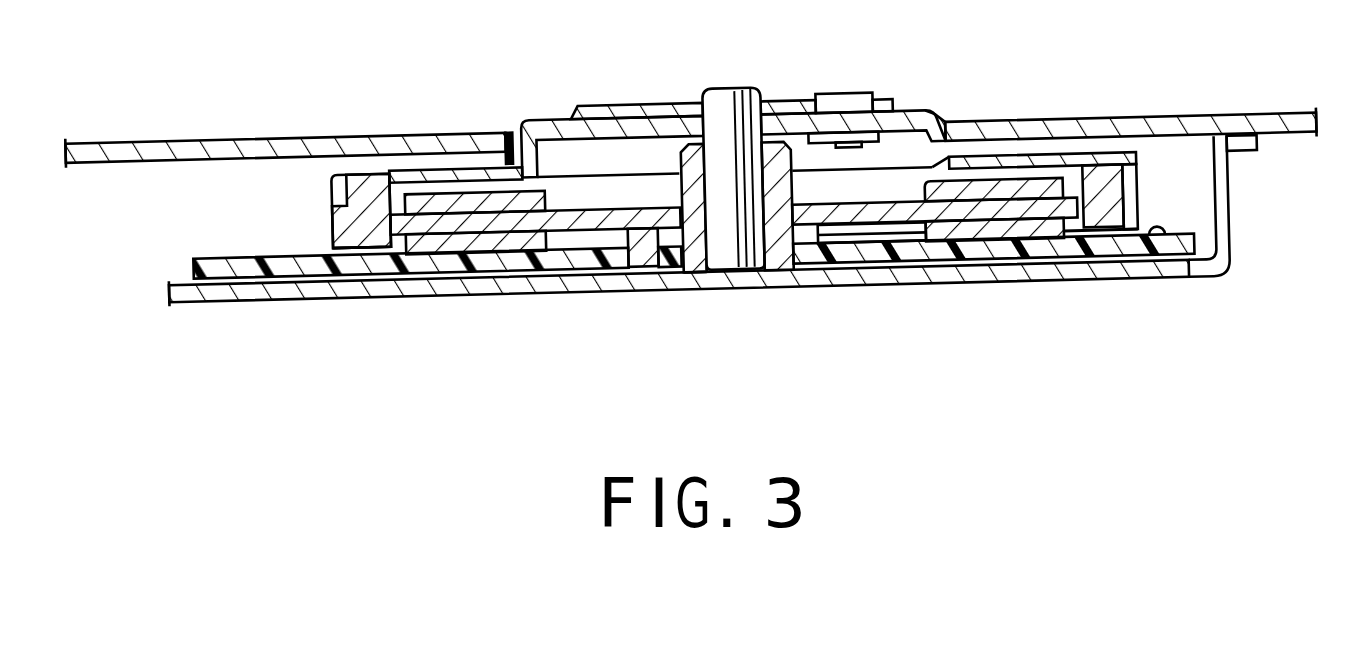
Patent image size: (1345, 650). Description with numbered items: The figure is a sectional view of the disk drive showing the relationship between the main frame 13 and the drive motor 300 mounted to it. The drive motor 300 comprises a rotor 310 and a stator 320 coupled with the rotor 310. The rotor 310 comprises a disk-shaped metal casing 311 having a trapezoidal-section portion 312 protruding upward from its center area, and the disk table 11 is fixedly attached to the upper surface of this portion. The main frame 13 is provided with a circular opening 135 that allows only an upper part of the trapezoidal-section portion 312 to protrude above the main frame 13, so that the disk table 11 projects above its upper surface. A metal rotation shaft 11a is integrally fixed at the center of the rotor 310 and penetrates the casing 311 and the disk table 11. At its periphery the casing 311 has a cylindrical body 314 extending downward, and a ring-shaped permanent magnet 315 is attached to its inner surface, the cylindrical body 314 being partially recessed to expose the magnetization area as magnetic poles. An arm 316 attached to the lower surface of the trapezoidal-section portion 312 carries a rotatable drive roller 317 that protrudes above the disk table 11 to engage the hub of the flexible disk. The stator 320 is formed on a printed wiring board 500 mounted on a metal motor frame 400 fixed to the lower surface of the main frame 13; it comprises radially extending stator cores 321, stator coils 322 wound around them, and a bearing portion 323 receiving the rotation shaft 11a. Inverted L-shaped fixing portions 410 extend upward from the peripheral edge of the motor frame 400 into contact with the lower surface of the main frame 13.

The disk table 11 is at (625, 107).
The rotation shaft 11a is at (735, 113).
The main frame 13 is at (1098, 118).
The circular opening 135 is at (947, 120).
The drive motor 300 is at (572, 302).
The rotor 310 is at (335, 227).
The casing 311 is at (438, 160).
The trapezoidal-section portion 312 is at (540, 122).
The cylindrical body 314 is at (1135, 172).
The permanent magnet 315 is at (360, 192).
The arm 316 is at (803, 138).
The drive roller 317 is at (848, 97).
The stator 320 is at (627, 240).
The stator cores 321 is at (430, 255).
The stator coils 322 is at (500, 243).
The bearing portion 323 is at (700, 275).
The motor frame 400 is at (1025, 260).
The fixing portions 410 is at (1220, 220).
The printed wiring board 500 is at (1182, 243).